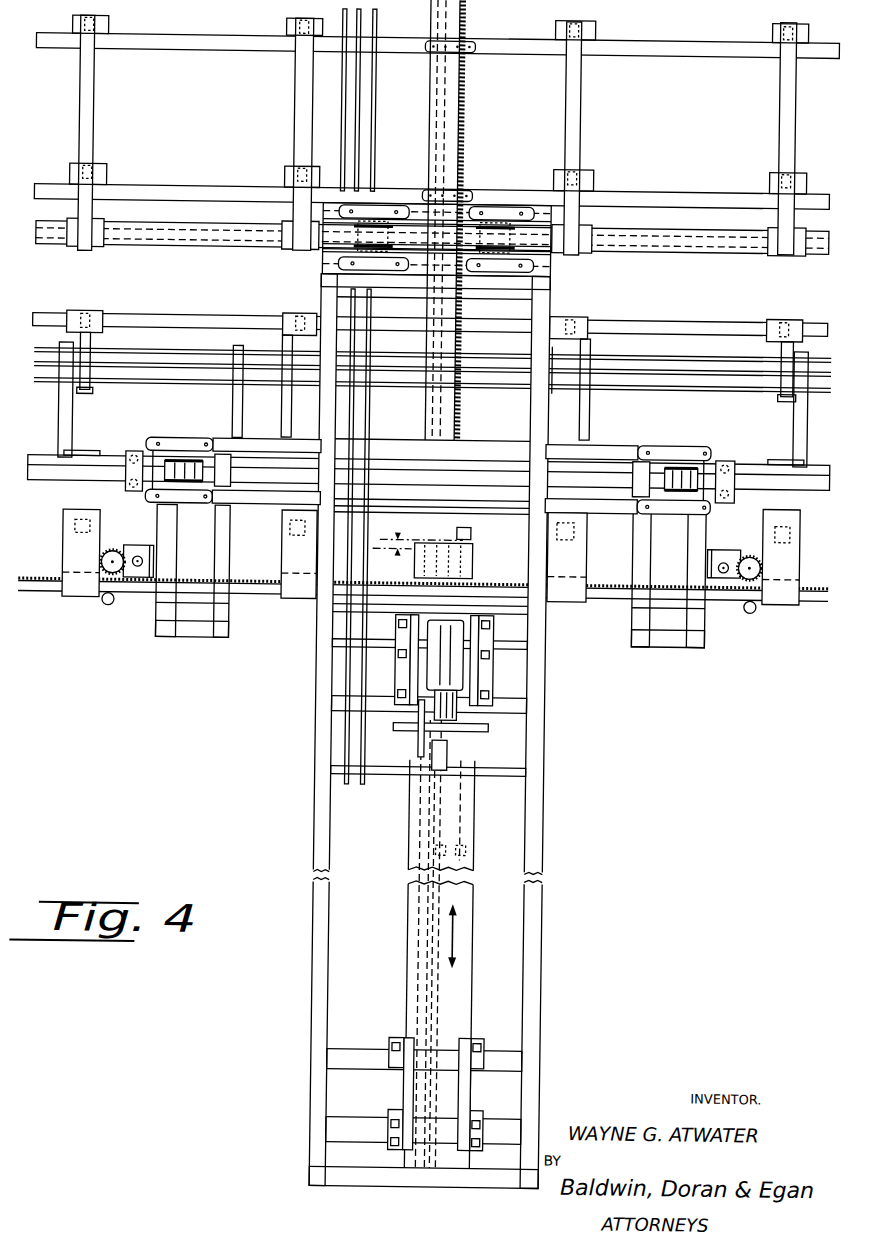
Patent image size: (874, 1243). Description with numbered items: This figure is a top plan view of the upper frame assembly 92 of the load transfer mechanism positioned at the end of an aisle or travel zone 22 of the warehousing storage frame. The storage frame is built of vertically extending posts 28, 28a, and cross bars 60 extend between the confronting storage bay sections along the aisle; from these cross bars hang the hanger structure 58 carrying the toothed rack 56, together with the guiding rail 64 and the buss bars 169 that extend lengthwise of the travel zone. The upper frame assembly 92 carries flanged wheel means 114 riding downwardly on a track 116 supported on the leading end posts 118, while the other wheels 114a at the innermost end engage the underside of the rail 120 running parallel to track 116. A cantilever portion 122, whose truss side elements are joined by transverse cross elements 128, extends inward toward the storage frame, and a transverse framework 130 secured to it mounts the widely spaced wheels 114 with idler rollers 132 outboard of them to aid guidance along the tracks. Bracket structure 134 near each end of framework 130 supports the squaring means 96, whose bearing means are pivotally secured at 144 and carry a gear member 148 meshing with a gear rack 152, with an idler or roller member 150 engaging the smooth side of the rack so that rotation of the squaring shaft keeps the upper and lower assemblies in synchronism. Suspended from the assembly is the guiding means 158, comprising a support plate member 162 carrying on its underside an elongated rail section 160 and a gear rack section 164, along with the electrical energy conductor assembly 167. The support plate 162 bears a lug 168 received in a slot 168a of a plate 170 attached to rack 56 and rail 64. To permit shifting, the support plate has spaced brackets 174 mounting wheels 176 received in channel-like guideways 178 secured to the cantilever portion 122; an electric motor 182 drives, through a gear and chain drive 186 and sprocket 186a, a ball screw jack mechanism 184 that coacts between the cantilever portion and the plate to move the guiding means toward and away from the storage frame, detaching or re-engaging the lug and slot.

The aisle or travel zone 22 is at (522, 78).
The post 28 is at (578, 50).
The post 28a is at (793, 298).
The toothed rack 56 is at (468, 92).
The hanger structure 58 is at (430, 40).
The cross bar 60 is at (506, 41).
The guiding rail 64 is at (428, 93).
The upper frame assembly 92 is at (562, 774).
The squaring means 96 is at (115, 545).
The flanged wheel means 114 is at (186, 462).
The flanged wheel means 114a is at (372, 222).
The track 116 is at (52, 460).
The leading end post 118 is at (66, 490).
The rail or track member 120 is at (723, 234).
The cantilever portion 122 is at (553, 977).
The cross element 128 is at (520, 641).
The transverse framework 130 is at (612, 442).
The idler roller 132 is at (138, 458).
The bracket structure 134 is at (208, 642).
The pivot 144 is at (142, 558).
The gear member 148 is at (104, 566).
The idler or roller member 150 is at (112, 609).
The gear rack 152 is at (603, 585).
The guiding means 158 is at (470, 845).
The rail section 160 is at (428, 955).
The support plate member 162 is at (481, 960).
The gear rack section 164 is at (470, 808).
The electrical energy conductor assembly 167 is at (375, 797).
The lug 168 is at (465, 548).
The slot 168a is at (474, 532).
The buss bars 169 is at (340, 118).
The plate 170 is at (425, 540).
The bracket 174 is at (470, 650).
The wheel 176 is at (400, 630).
The channel-like guideway 178 is at (400, 618).
The electric motor 182 is at (444, 670).
The ball screw jack mechanism 184 is at (453, 758).
The gear and chain drive 186 is at (399, 727).
The sprocket 186a is at (424, 748).